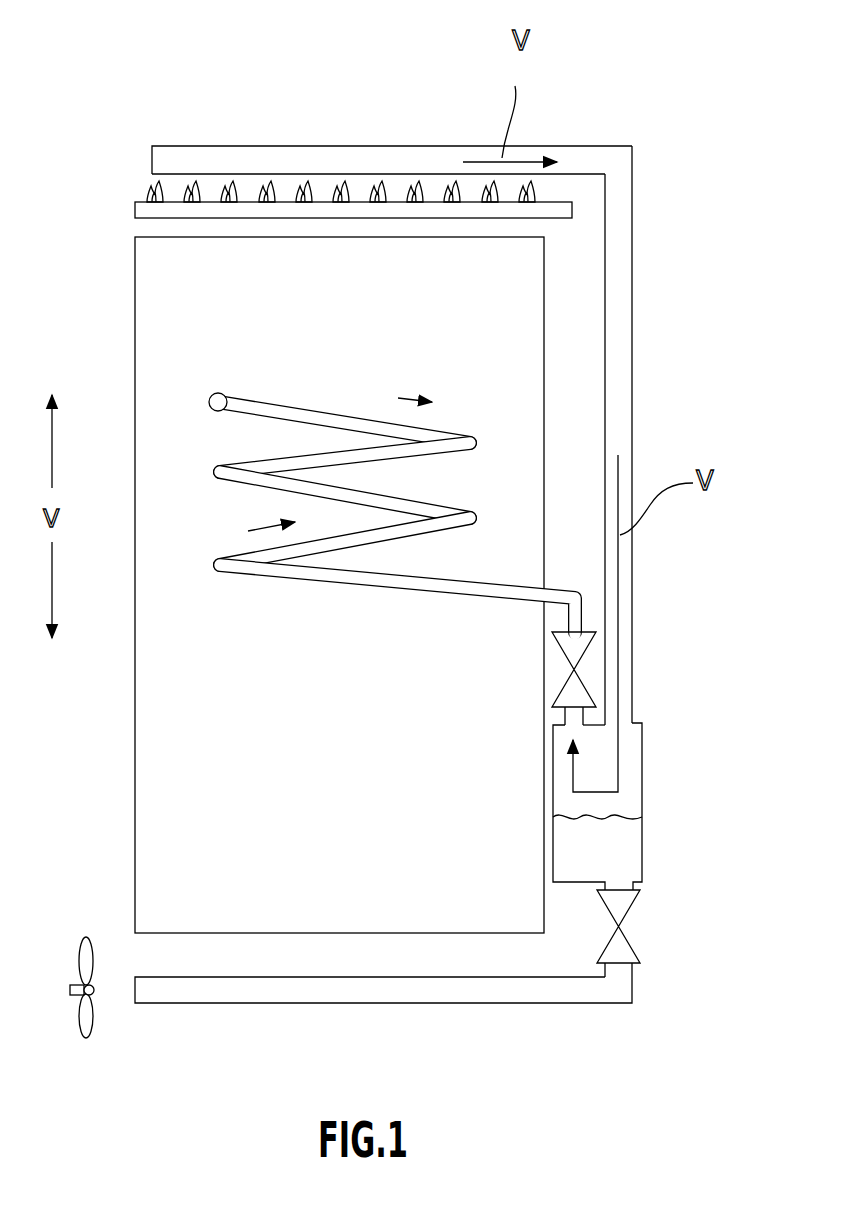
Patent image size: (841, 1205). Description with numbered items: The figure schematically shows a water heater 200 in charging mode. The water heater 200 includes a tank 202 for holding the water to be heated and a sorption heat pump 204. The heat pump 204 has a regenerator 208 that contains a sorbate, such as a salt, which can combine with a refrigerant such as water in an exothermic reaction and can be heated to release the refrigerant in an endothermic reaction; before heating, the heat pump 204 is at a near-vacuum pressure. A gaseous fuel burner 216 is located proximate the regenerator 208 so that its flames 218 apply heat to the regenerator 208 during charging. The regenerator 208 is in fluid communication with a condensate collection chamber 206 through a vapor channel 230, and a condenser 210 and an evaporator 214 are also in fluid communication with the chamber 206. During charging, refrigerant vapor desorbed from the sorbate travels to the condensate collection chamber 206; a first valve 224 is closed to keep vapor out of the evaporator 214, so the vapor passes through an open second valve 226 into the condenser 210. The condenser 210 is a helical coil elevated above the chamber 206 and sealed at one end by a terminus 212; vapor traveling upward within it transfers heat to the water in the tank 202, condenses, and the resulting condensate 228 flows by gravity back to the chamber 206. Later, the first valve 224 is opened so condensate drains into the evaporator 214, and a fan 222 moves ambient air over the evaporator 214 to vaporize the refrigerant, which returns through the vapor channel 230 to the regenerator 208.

The water heater 200 is at (630, 90).
The tank 202 is at (138, 290).
The sorption heat pump 204 is at (648, 380).
The condensate collection chamber 206 is at (643, 743).
The regenerator 208 is at (361, 158).
The condenser 210 is at (330, 411).
The terminus 212 is at (214, 394).
The evaporator 214 is at (372, 1004).
The gaseous fuel burner 216 is at (136, 212).
The flames 218 is at (150, 186).
The fan 222 is at (86, 1038).
The first valve 224 is at (645, 932).
The second valve 226 is at (568, 653).
The condensate 228 is at (622, 840).
The vapor channel 230 is at (633, 248).